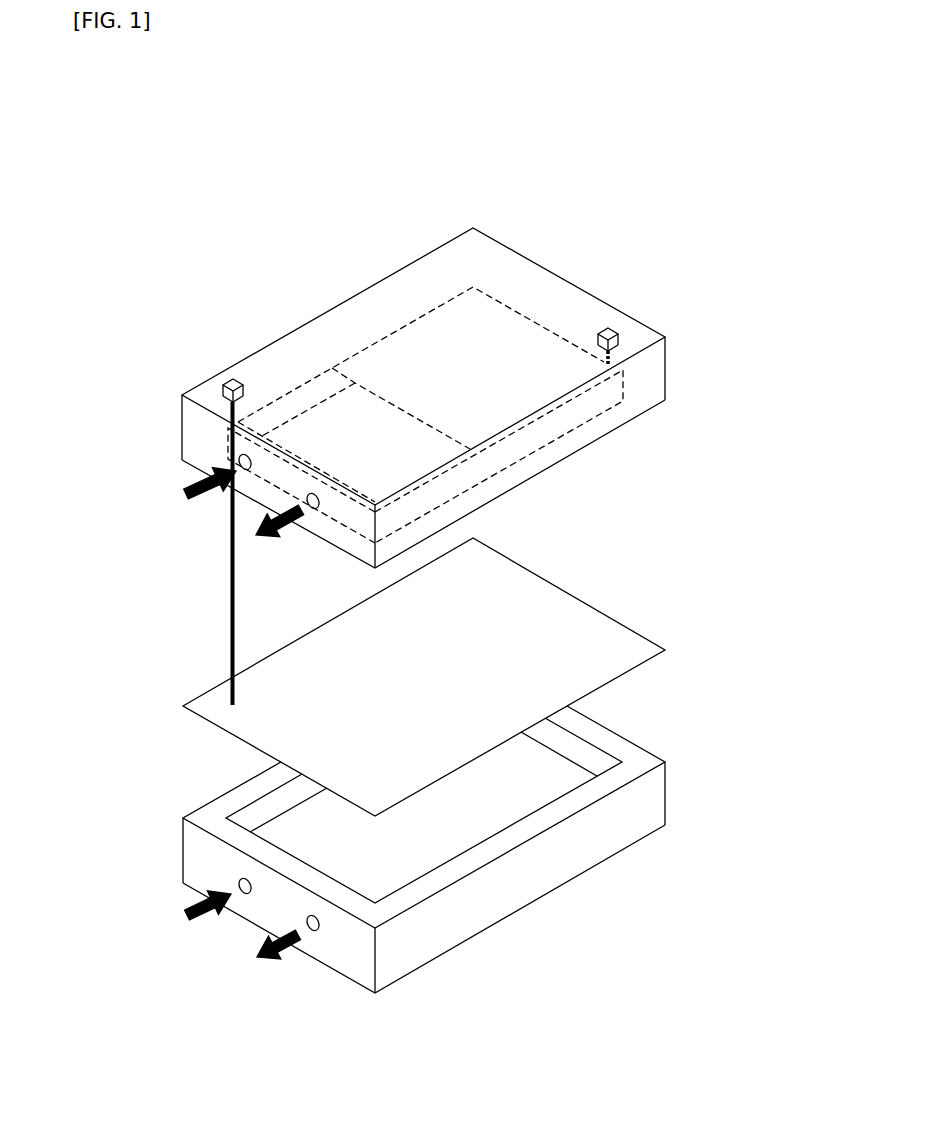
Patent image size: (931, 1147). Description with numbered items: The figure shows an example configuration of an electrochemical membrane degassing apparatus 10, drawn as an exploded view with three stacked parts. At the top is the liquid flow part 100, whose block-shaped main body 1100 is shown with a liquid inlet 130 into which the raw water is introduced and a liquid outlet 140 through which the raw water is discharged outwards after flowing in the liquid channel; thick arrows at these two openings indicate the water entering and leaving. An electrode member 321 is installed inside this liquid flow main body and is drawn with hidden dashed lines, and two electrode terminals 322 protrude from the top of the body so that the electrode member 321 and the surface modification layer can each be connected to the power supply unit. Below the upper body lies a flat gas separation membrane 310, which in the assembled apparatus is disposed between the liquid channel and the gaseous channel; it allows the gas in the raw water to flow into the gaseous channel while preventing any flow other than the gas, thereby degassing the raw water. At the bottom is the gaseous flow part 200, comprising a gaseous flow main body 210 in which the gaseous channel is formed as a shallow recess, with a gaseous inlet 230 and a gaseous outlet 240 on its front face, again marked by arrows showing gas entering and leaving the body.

The electrochemical membrane degassing apparatus 10 is at (633, 63).
The liquid flow part 100 is at (377, 432).
The upper body 1100 is at (442, 248).
The electrode member 321 is at (400, 327).
The electrode terminal 322 is at (614, 331).
The liquid inlet 130 is at (230, 456).
The liquid outlet 140 is at (319, 505).
The gas separation membrane 310 is at (636, 652).
The gaseous flow part 200 is at (411, 876).
The gaseous flow main body 210 is at (607, 837).
The gaseous inlet 230 is at (237, 880).
The gaseous outlet 240 is at (322, 928).